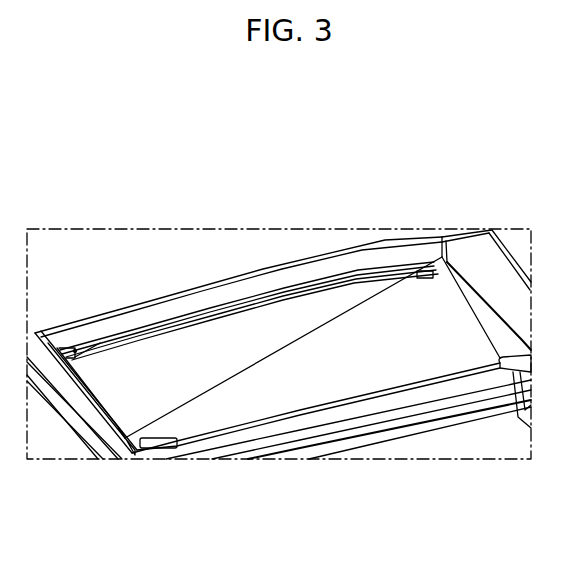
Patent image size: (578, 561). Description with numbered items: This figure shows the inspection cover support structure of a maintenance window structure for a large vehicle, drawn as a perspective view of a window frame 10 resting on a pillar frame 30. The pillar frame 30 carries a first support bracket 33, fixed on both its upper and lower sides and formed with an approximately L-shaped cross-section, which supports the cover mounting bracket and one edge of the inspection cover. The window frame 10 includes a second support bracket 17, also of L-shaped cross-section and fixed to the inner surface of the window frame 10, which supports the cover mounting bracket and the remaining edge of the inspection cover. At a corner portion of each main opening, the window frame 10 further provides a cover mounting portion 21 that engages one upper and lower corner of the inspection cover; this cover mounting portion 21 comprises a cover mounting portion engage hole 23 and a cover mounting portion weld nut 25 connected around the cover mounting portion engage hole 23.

The window frame 10 is at (262, 268).
The second support bracket 17 is at (458, 285).
The cover mounting portion 21 is at (442, 239).
The cover mounting portion engage hole 23 is at (75, 350).
The cover mounting portion weld nut 25 is at (420, 272).
The pillar frame 30 is at (377, 442).
The first support bracket 33 is at (418, 388).